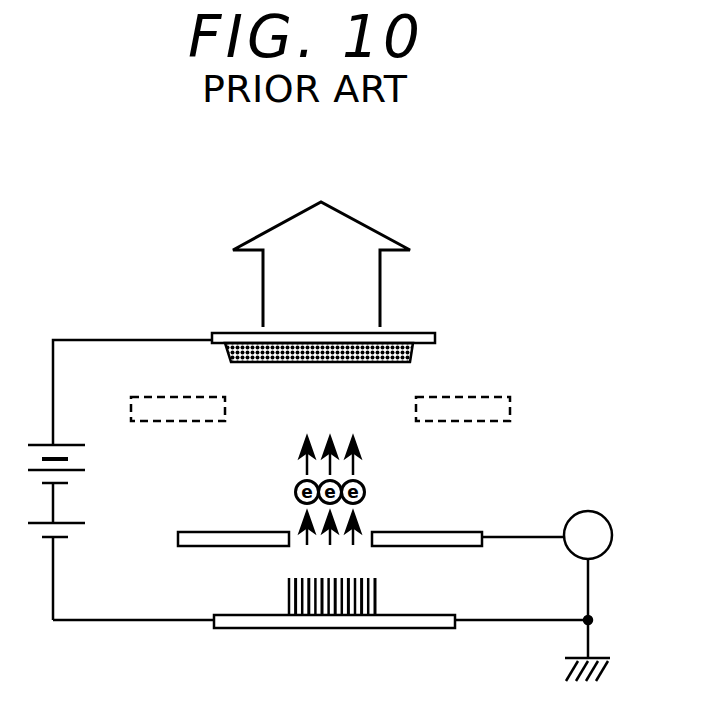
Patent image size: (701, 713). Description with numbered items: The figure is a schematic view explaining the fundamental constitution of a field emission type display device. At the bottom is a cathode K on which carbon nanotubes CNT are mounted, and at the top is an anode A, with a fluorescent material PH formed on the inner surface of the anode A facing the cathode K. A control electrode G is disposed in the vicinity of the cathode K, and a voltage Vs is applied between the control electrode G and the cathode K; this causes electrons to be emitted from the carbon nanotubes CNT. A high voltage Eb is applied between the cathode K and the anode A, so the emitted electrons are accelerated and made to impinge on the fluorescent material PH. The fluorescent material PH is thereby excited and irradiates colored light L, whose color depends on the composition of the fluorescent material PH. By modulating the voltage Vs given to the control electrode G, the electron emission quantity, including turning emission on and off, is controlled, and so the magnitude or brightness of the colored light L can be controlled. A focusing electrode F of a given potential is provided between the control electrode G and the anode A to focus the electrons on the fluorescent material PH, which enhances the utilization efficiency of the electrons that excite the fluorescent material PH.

The colored light L is at (350, 232).
The anode A is at (417, 332).
The fluorescent material PH is at (413, 348).
The focusing electrode F is at (510, 407).
The high voltage Eb is at (70, 491).
The control electrode G is at (452, 532).
The voltage Vs is at (588, 535).
The cathode K is at (415, 628).
The carbon nanotubes CNT is at (272, 604).